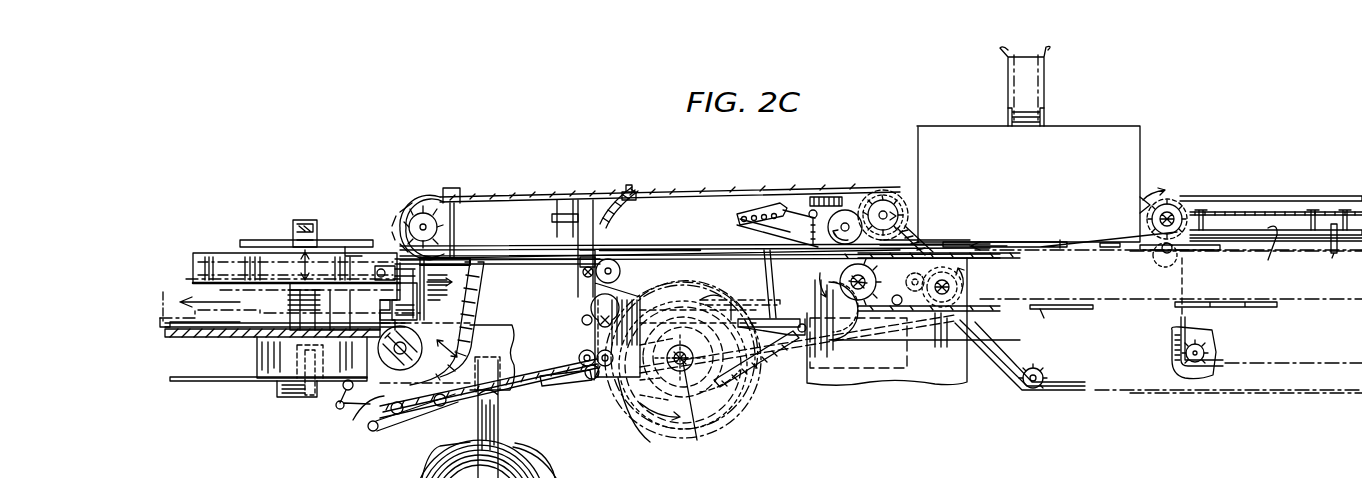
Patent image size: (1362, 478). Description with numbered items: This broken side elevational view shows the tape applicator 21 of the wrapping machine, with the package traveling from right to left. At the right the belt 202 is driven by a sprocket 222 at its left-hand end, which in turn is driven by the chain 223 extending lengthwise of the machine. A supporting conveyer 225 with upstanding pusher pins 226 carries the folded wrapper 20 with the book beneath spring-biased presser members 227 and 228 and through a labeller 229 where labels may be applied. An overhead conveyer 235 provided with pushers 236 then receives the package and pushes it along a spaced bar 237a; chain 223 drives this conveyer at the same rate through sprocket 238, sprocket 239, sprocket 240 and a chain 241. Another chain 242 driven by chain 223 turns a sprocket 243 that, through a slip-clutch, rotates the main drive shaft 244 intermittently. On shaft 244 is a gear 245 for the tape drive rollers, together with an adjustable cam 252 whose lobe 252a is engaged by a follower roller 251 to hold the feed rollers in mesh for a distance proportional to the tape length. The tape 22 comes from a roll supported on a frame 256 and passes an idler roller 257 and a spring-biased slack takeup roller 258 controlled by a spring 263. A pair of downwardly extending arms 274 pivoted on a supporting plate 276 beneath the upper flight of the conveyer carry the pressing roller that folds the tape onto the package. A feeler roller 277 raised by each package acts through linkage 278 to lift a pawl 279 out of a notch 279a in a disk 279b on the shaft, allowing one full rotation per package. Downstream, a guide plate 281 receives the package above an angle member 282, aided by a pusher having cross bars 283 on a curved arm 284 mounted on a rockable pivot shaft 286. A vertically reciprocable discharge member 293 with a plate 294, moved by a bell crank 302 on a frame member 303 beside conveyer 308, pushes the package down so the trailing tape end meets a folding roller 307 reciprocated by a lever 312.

The wrapper 20 is at (190, 281).
The tape applicator 21 is at (771, 163).
The tape 22 is at (574, 362).
The belt 202 is at (1270, 195).
The sprocket 222 is at (1175, 210).
The chain 223 is at (1068, 390).
The supporting conveyer 225 is at (1070, 310).
The pusher pins 226 is at (1041, 311).
The presser member 227 is at (1333, 256).
The presser member 228 is at (1268, 256).
The labeller 229 is at (1130, 147).
The overhead conveyer 235 is at (828, 195).
The pushers 236 is at (506, 248).
The bar 237a is at (670, 250).
The sprocket 238 is at (970, 284).
The sprocket 239 is at (938, 243).
The sprocket 240 is at (885, 194).
The chain 241 is at (918, 224).
The chain 242 is at (782, 372).
The sprocket 243 is at (757, 344).
The main drive shaft 244 is at (706, 414).
The gear 245 is at (672, 430).
The follower roller 251 is at (751, 394).
The adjustable cam 252 is at (722, 412).
The cam lobe 252a is at (737, 437).
The frame 256 is at (498, 432).
The idler roller 257 is at (584, 380).
The slack takeup roller 258 is at (397, 416).
The spring 263 is at (373, 431).
The arms 274 is at (614, 225).
The supporting plate 276 is at (702, 196).
The feeler roller 277 is at (850, 212).
The linkage 278 is at (730, 235).
The pawl 279 is at (779, 319).
The notch 279a is at (658, 300).
The disk 279b is at (726, 300).
The guide plate 281 is at (208, 262).
The angle member 282 is at (388, 292).
The cross bars 283 is at (480, 266).
The curved arm 284 is at (506, 352).
The pivot shaft 286 is at (349, 420).
The discharge member 293 is at (281, 223).
The plate 294 is at (357, 236).
The bell crank 302 is at (337, 398).
The frame member 303 is at (277, 392).
The folding roller 307 is at (378, 266).
The conveyer 308 is at (208, 377).
The lever 312 is at (483, 308).